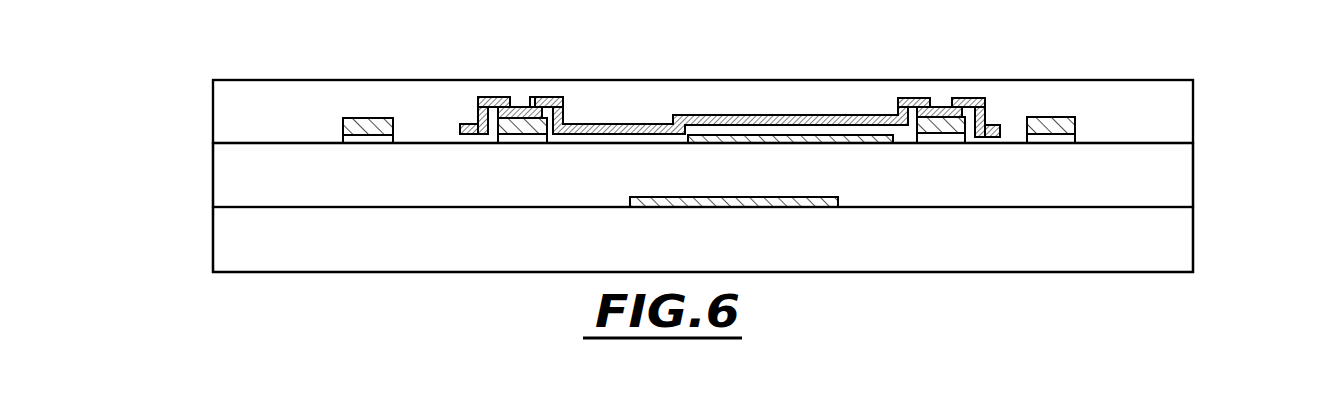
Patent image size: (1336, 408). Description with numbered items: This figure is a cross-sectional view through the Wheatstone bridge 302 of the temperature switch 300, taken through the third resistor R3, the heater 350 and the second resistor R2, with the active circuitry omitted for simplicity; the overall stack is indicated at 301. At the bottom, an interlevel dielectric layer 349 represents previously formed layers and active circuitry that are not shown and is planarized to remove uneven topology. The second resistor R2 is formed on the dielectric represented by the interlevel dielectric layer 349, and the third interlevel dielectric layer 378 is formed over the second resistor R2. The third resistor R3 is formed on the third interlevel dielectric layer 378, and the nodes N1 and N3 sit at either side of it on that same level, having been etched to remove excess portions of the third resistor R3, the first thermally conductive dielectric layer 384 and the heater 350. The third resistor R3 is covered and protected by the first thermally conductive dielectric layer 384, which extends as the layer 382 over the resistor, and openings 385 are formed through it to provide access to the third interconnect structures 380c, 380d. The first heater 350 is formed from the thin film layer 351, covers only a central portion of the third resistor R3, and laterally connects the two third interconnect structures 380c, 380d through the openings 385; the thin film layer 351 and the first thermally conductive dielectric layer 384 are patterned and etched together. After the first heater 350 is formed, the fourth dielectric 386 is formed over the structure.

The temperature switch 300 is at (1206, 43).
The substrate 301 is at (199, 207).
The Wheatstone bridge 302 is at (829, 51).
The interlevel dielectric layer 349 is at (1178, 248).
The third interlevel dielectric layer 378 is at (1178, 185).
The fourth dielectric 386 is at (1178, 120).
The resistive layer 382 is at (684, 141).
The first thermally conductive dielectric layer 384 is at (463, 139).
The openings 385 is at (520, 93).
The first heater 350 is at (918, 105).
The thin film layer 351 is at (986, 117).
The third interconnect structure 380c is at (947, 124).
The third interconnect structure 380d is at (516, 130).
The node N1 is at (1074, 118).
The node N3 is at (344, 127).
The second resistor R2 is at (834, 197).
The third resistor R3 is at (794, 139).